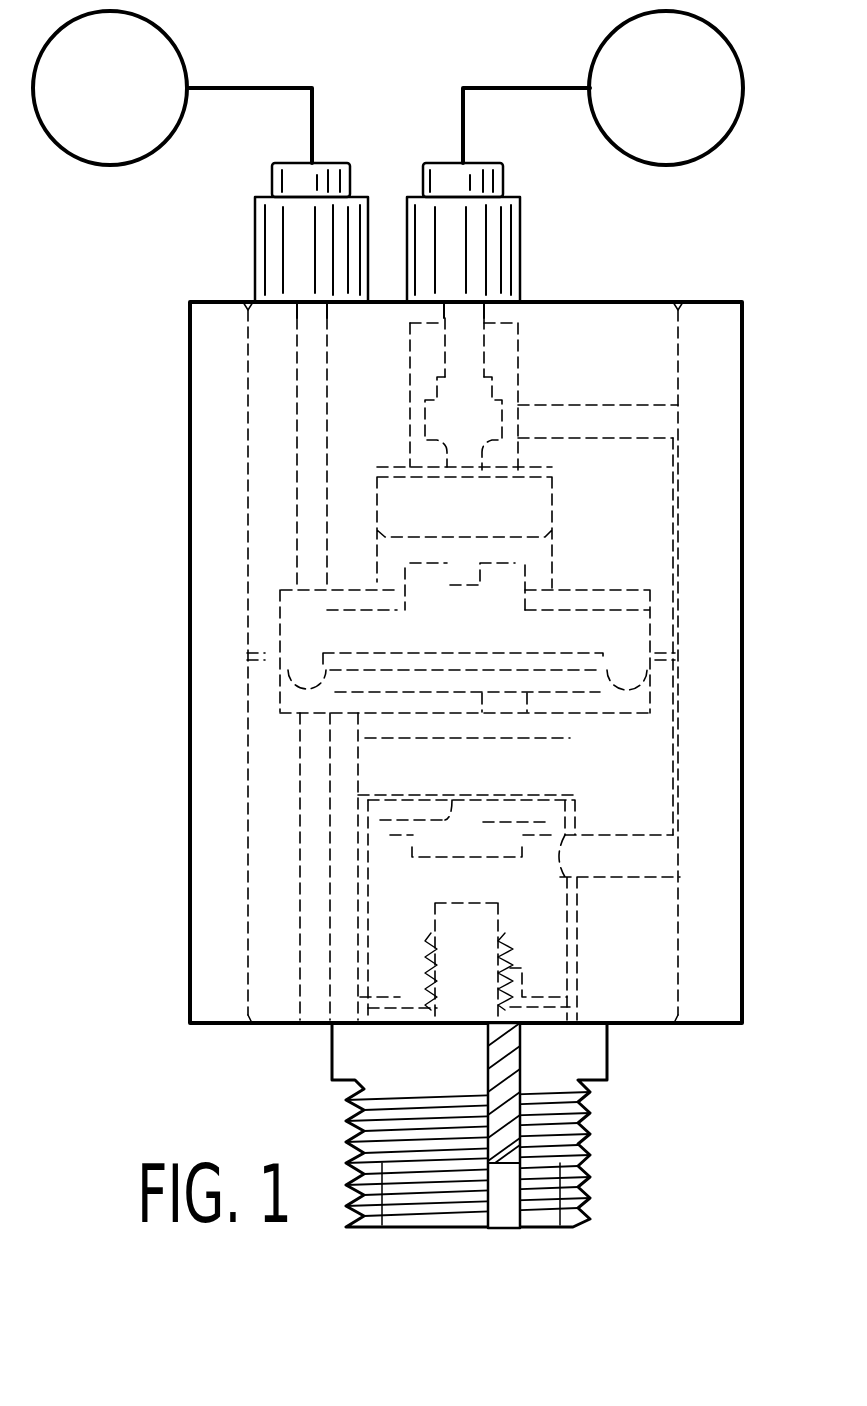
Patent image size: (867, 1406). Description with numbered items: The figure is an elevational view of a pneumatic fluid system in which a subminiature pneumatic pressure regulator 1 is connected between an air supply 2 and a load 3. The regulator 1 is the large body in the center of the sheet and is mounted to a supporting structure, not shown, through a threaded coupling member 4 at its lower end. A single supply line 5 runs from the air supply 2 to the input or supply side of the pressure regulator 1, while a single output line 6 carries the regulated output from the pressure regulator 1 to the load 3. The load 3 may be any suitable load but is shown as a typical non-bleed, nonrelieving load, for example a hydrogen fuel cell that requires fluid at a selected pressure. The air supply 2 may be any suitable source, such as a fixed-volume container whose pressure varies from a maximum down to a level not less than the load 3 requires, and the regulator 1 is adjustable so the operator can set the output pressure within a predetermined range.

The pneumatic pressure regulator 1 is at (750, 656).
The air supply 2 is at (718, 140).
The load 3 is at (145, 34).
The threaded coupling member 4 is at (578, 1132).
The supply line 5 is at (510, 88).
The output line 6 is at (270, 88).